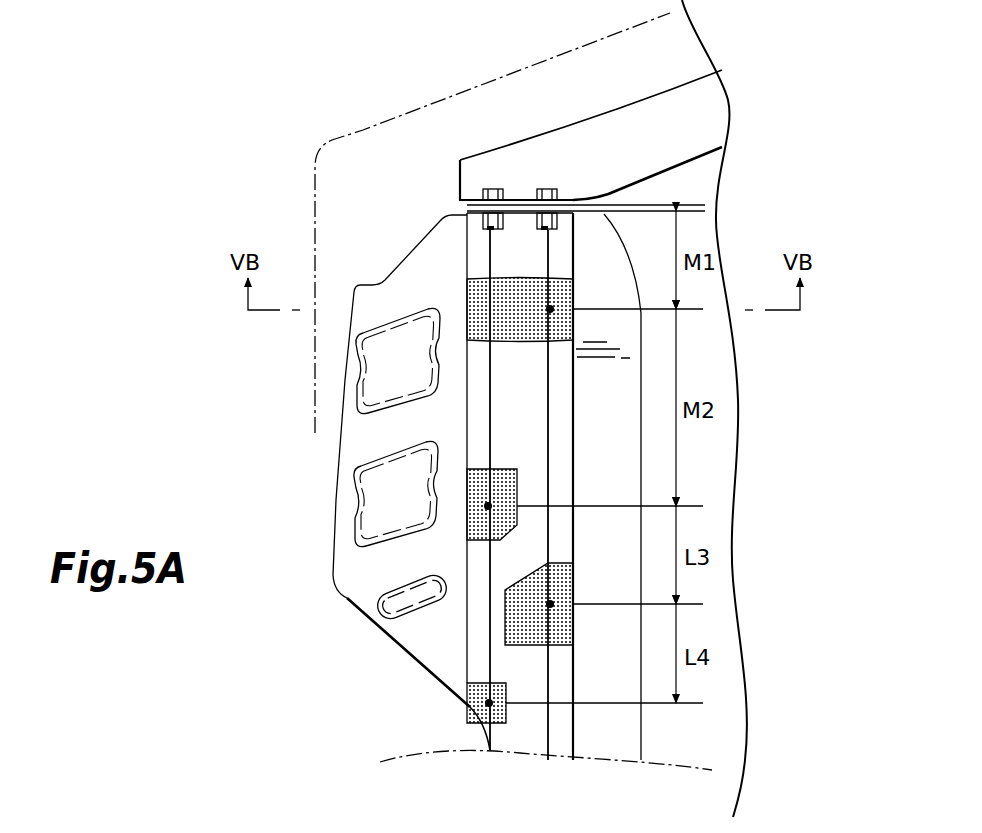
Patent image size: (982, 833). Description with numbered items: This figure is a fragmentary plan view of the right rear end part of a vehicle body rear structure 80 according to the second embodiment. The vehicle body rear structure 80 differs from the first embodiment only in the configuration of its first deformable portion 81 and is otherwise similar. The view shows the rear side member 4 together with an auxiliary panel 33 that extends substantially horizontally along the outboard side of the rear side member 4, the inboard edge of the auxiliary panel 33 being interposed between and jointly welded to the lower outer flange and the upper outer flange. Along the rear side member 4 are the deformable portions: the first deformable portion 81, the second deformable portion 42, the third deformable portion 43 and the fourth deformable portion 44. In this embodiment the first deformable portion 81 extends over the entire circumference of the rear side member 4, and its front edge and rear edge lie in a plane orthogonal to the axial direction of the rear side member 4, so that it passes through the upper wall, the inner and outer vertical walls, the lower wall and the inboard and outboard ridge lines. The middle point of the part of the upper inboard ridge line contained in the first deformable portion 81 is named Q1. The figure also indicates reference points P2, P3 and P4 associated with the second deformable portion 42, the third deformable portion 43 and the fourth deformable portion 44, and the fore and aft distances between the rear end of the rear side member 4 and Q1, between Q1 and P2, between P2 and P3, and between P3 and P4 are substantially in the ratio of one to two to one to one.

The vehicle body rear structure 80 is at (738, 105).
The rear side member 4 is at (498, 258).
The first deformable portion 81 is at (515, 298).
The auxiliary panel 33 is at (340, 600).
The second deformable portion 42 is at (508, 488).
The third deformable portion 43 is at (533, 625).
The fourth deformable portion 44 is at (498, 722).
The middle point of the upper inboard ridge line within the first deformable portion Q1 is at (552, 307).
The reference point of the second deformable portion P2 is at (488, 506).
The reference point of the third deformable portion P3 is at (552, 604).
The reference point of the fourth deformable portion P4 is at (488, 705).